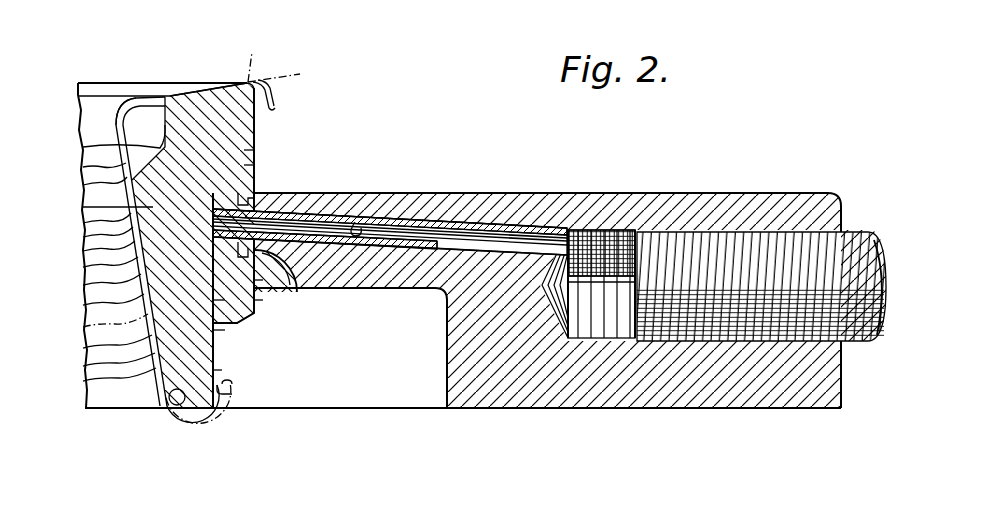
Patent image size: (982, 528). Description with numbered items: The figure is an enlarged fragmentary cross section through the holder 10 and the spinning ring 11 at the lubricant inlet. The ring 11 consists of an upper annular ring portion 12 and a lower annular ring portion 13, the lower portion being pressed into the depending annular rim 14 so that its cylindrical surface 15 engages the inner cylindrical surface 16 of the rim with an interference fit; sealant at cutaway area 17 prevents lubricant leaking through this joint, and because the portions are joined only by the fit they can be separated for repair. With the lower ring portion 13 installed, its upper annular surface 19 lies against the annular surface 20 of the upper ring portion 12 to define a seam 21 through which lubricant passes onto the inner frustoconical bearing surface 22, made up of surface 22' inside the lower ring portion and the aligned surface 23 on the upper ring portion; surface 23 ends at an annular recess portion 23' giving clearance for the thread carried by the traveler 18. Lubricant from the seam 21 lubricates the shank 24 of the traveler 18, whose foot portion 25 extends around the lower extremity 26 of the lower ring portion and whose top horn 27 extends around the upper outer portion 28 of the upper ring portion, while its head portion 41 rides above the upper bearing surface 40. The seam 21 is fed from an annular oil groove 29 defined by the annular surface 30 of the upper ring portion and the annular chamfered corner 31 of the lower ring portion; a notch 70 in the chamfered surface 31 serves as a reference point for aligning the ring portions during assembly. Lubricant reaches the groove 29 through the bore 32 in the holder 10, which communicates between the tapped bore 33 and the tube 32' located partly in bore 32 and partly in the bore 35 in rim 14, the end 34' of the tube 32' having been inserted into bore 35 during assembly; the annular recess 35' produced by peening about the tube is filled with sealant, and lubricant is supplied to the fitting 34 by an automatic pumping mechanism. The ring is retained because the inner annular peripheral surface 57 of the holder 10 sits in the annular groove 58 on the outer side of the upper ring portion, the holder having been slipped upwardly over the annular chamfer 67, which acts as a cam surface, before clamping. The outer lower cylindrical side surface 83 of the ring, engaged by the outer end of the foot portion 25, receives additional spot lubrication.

The holder 10 is at (736, 193).
The spinning ring 11 is at (219, 356).
The upper annular ring portion 12 is at (238, 127).
The lower annular ring portion 13 is at (83, 305).
The depending annular rim 14 is at (263, 282).
The cylindrical surface 15 is at (83, 285).
The inner cylindrical surface 16 is at (225, 300).
The cutaway area 17 is at (213, 330).
The traveler 18 is at (253, 58).
The upper annular surface 19 is at (83, 185).
The annular surface 20 is at (83, 223).
The seam 21 is at (83, 207).
The inner frustoconical bearing surface 22 is at (93, 348).
The surface on inside of lower ring portion 22' is at (95, 375).
The surface on upper ring portion 23 is at (144, 245).
The annular recess portion 23' is at (99, 133).
The shank 24 is at (83, 327).
The foot portion 25 is at (198, 423).
The lower extremity 26 is at (170, 403).
The top horn 27 is at (274, 93).
The upper outer portion 28 is at (262, 79).
The annular oil groove 29 is at (252, 165).
The annular surface 30 is at (252, 150).
The annular chamfered corner 31 is at (83, 237).
The bore 32 is at (390, 206).
The tube 32' is at (371, 194).
The tapped bore 33 is at (592, 230).
The fitting 34 is at (761, 244).
The end of tube 34' is at (135, 116).
The bore 35 is at (293, 186).
The annular recess 35' is at (305, 320).
The upper bearing surface 40 is at (193, 90).
The head portion 41 is at (168, 82).
The inner annular peripheral surface 57 is at (249, 194).
The annular groove 58 is at (269, 268).
The annular chamfer 67 is at (259, 326).
The notch 70 is at (83, 267).
The outer lower cylindrical side surface 83 is at (238, 386).